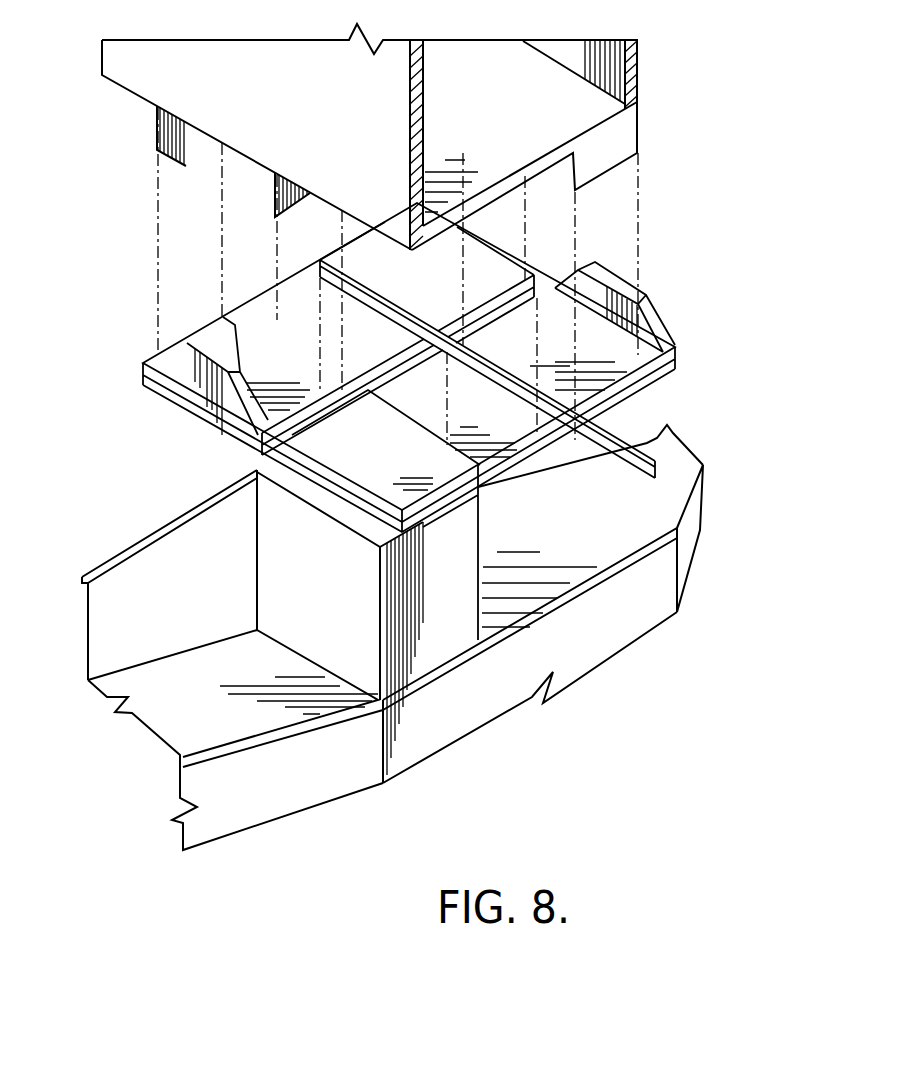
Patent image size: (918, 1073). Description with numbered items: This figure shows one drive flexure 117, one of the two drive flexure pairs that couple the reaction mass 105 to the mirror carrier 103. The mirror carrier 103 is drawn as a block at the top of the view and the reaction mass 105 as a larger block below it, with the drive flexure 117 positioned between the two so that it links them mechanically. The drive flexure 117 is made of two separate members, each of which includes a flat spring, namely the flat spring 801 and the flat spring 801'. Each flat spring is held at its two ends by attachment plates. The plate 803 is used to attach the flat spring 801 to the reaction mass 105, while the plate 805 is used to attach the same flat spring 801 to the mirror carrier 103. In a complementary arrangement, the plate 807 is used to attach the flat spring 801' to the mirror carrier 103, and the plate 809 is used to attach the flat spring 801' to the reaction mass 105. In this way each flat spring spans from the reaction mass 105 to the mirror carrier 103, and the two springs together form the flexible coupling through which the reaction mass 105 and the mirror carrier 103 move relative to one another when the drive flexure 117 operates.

The mirror carrier 103 is at (353, 149).
The reaction mass 105 is at (603, 633).
The drive flexure 117 is at (713, 259).
The flat spring 801 is at (539, 461).
The flat spring 801' is at (375, 356).
The plate 803 is at (367, 459).
The plate 805 is at (627, 355).
The plate 807 is at (208, 342).
The plate 809 is at (497, 267).